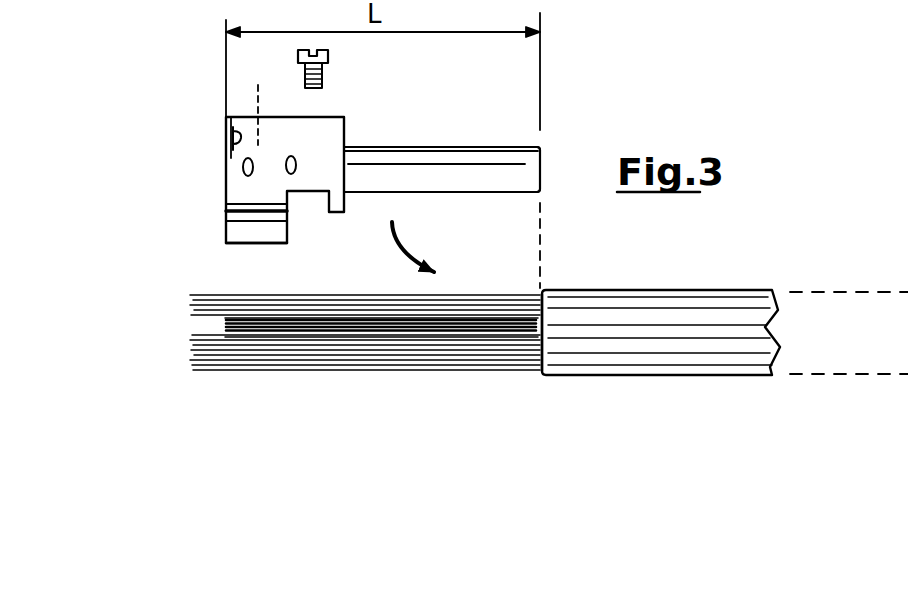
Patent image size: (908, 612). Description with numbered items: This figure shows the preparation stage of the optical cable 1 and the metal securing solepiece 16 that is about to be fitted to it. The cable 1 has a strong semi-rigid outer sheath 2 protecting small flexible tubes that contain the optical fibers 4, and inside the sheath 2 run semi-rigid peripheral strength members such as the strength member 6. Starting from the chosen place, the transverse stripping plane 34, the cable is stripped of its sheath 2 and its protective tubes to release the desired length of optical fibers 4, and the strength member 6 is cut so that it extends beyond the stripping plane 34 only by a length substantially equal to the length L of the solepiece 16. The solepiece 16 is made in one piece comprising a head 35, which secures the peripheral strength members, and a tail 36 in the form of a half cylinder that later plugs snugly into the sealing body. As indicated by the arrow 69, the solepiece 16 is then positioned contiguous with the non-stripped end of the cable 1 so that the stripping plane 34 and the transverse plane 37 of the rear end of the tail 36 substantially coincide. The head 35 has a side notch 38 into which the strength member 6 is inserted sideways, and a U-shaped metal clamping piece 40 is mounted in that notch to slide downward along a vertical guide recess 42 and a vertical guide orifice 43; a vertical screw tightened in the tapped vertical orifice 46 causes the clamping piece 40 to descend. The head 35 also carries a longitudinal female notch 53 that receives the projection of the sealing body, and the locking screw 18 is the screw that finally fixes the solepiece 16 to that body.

The cable 1 is at (546, 320).
The outer sheath 2 is at (737, 313).
The optical fibers 4 is at (237, 350).
The strength member 6 is at (288, 333).
The securing solepiece 16 is at (419, 133).
The locking screw 18 is at (323, 72).
The transverse stripping plane 34 is at (537, 350).
The head 35 is at (218, 173).
The tail 36 is at (498, 158).
The transverse plane of the rear end of the tail 37 is at (547, 162).
The side notch 38 is at (222, 221).
The clamping piece 40 is at (246, 203).
The vertical guide recess 42 is at (228, 126).
The vertical guide orifice 43 is at (298, 161).
The tapped vertical orifice 46 is at (255, 175).
The female notch 53 is at (286, 114).
The arrow 69 is at (404, 247).